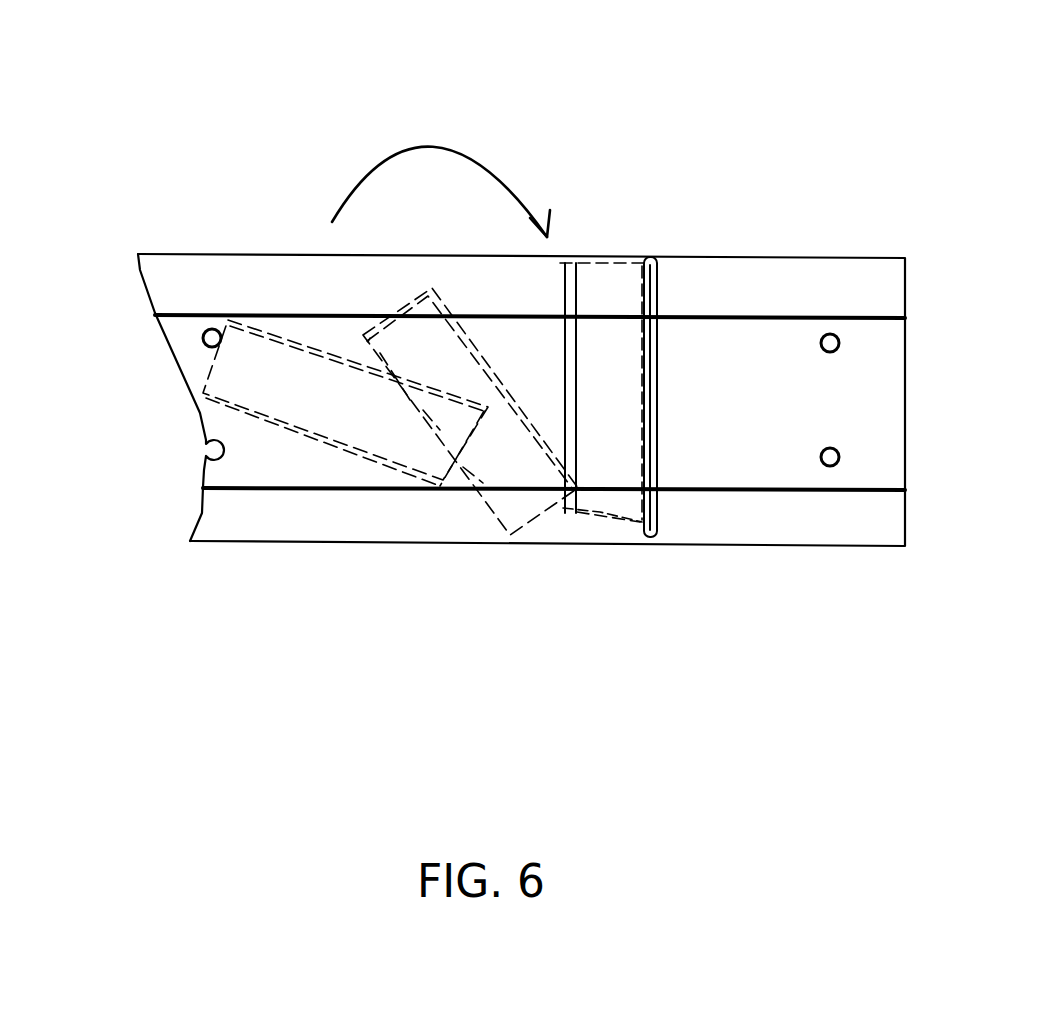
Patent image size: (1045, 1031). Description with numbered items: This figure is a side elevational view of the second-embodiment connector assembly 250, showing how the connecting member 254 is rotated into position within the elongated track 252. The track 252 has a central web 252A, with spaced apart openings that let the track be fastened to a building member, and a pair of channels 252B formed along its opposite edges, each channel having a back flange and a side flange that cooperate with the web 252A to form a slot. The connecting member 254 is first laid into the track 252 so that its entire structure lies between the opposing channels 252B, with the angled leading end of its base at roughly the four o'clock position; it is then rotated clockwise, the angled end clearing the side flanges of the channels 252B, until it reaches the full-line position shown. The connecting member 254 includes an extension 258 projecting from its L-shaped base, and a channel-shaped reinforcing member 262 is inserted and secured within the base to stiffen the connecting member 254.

The connector assembly 250 is at (574, 126).
The elongated track 252 is at (570, 265).
The web 252A is at (182, 335).
The channels 252B is at (188, 283).
The connecting member 254 is at (452, 598).
The extension 258 is at (655, 300).
The reinforcing member 262 is at (620, 507).